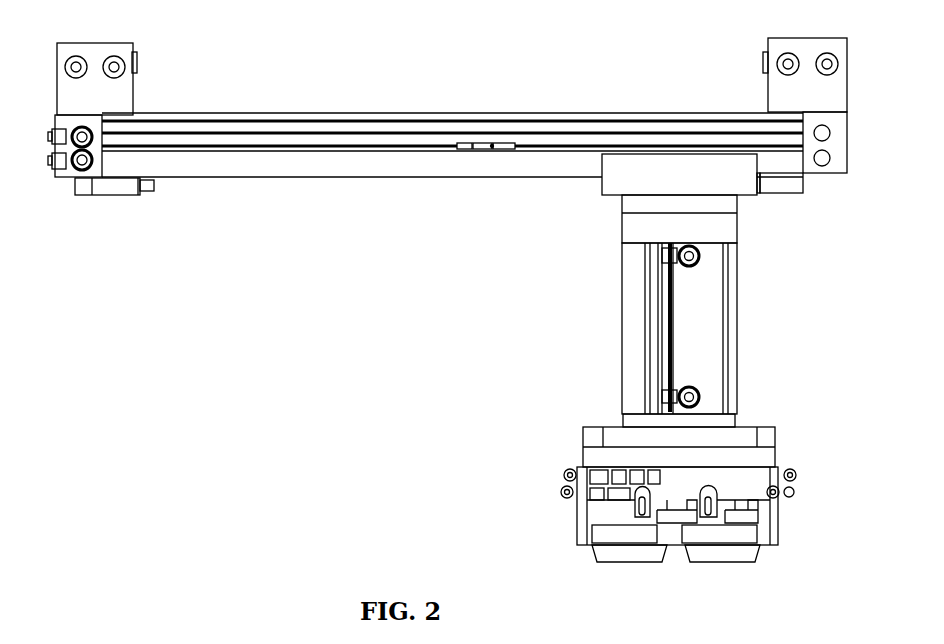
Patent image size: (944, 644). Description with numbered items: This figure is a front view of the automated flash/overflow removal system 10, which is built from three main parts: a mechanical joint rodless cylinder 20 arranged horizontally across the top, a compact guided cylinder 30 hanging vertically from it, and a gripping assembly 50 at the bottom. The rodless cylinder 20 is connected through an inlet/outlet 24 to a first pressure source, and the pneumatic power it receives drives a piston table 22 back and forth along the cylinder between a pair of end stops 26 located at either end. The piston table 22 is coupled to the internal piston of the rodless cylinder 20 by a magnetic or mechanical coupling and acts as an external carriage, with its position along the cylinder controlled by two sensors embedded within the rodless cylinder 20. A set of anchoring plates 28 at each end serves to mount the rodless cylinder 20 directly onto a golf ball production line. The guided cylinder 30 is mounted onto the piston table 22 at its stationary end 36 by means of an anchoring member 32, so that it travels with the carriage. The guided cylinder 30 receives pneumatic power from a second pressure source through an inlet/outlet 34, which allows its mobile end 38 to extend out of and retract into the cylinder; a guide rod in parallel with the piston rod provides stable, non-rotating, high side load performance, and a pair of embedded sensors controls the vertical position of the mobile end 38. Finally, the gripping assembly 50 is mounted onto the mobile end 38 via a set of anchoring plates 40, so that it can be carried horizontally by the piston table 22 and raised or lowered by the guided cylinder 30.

The automated flash/overflow removal system 10 is at (287, 353).
The mechanical joint rodless cylinder 20 is at (286, 157).
The piston table 22 is at (642, 173).
The inlet/outlet 24 is at (92, 137).
The end stops 26 is at (107, 185).
The anchoring plates 28 is at (805, 97).
The compact guided cylinder 30 is at (633, 300).
The anchoring member 32 is at (703, 213).
The inlet/outlet 34 is at (698, 262).
The stationary end 36 is at (698, 238).
The mobile end 38 is at (647, 420).
The anchoring plates 40 is at (650, 443).
The gripping assembly 50 is at (733, 487).